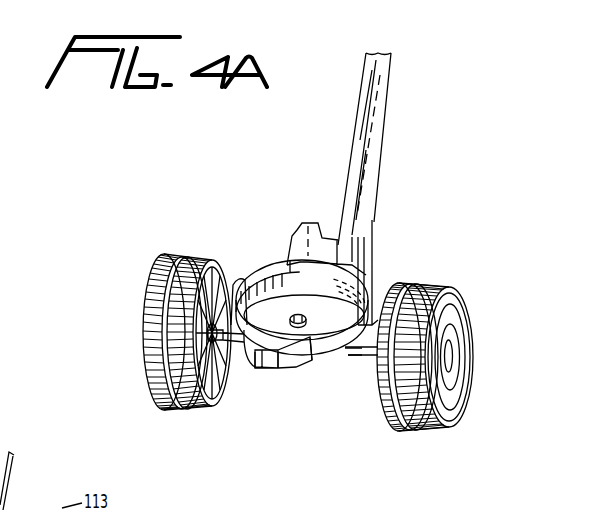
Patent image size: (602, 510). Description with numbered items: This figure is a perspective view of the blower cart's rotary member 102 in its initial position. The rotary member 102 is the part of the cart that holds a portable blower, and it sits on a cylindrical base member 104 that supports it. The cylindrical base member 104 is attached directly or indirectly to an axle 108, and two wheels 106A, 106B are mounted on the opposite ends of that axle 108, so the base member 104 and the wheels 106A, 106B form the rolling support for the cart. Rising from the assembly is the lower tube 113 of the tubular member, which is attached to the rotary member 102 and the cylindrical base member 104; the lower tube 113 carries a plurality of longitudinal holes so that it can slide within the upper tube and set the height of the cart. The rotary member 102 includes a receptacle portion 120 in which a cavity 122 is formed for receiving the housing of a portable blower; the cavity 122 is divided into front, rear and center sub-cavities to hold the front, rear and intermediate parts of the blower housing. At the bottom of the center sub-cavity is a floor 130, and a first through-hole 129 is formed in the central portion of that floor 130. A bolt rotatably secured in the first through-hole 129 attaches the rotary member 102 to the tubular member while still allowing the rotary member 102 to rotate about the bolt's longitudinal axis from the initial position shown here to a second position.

The rotary member 102 is at (290, 282).
The cylindrical base member 104 is at (300, 373).
The wheel 106A is at (144, 300).
The wheel 106B is at (473, 353).
The axle 108 is at (353, 360).
The lower tube 113 is at (377, 136).
The receptacle portion 120 is at (375, 280).
The cavity 122 is at (222, 340).
The first through-hole 129 is at (258, 355).
The floor 130 is at (313, 312).